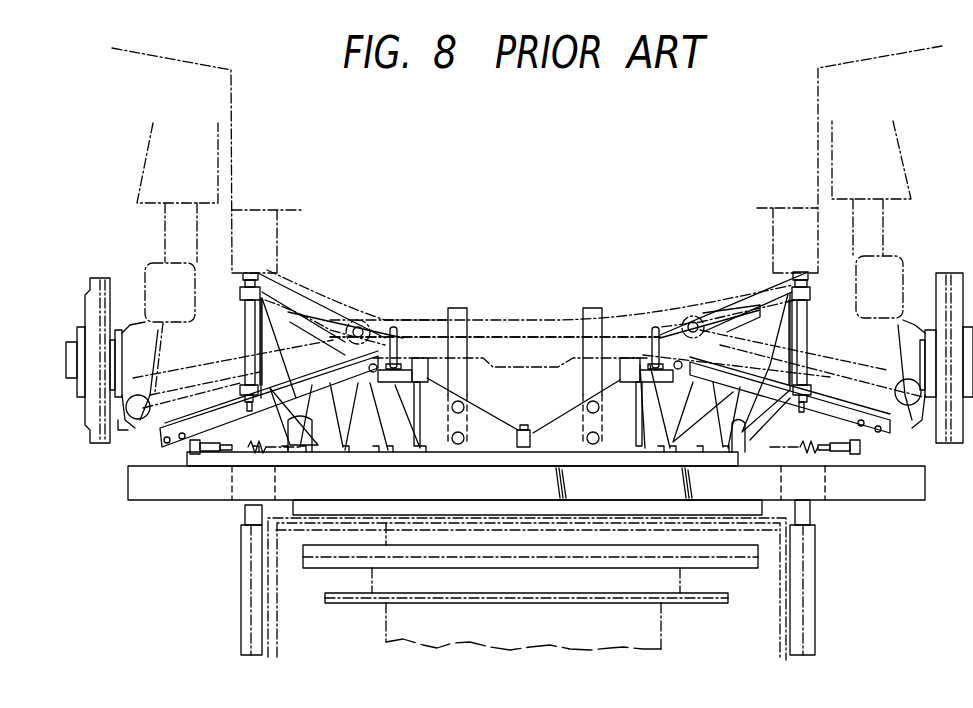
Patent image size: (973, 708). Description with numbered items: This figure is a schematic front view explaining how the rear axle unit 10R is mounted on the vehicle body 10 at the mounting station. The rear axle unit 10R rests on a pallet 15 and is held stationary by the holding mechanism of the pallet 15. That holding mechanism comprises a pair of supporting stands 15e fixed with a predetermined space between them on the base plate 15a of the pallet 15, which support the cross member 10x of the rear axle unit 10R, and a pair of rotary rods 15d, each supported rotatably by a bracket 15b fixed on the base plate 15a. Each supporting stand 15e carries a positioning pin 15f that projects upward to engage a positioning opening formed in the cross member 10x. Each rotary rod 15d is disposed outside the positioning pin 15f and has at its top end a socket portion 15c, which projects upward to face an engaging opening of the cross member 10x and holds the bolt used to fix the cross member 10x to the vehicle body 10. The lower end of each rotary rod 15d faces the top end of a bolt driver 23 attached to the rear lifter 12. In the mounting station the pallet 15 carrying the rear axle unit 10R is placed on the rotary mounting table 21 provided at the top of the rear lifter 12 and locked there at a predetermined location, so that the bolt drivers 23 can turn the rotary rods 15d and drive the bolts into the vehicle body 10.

The vehicle body 10 is at (906, 50).
The cross member 10x is at (505, 325).
The rear axle unit 10R is at (528, 312).
The rear lifter 12 is at (575, 580).
The pallet 15 is at (516, 408).
The base plate 15a is at (195, 488).
The bracket 15b is at (293, 412).
The socket portion 15c is at (255, 273).
The rotary rod 15d is at (248, 337).
The supporting stand 15e is at (407, 407).
The positioning pin 15f is at (398, 330).
The rotary mounting table 21 is at (760, 522).
The bolt driver 23 is at (255, 592).